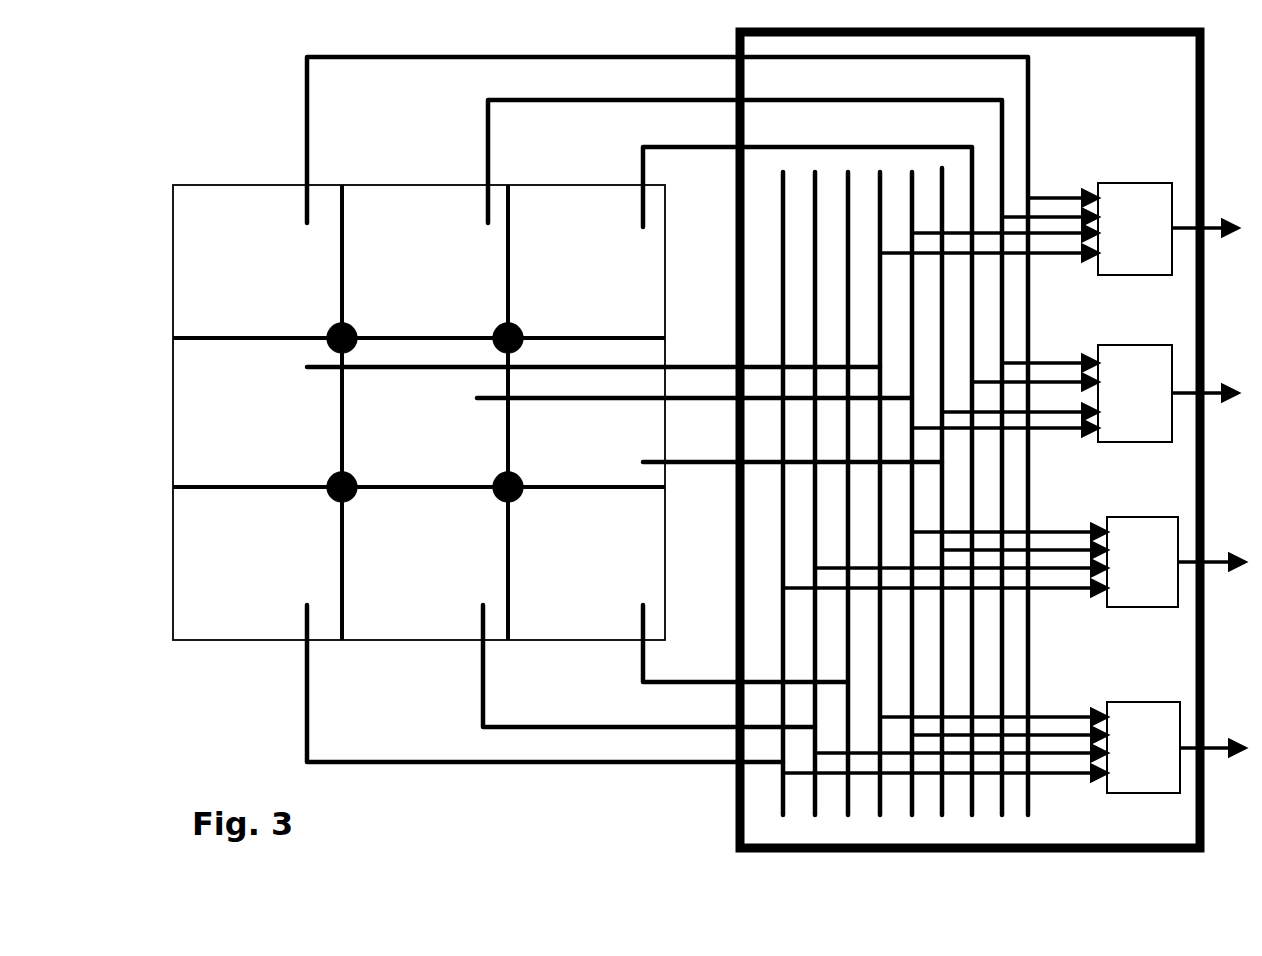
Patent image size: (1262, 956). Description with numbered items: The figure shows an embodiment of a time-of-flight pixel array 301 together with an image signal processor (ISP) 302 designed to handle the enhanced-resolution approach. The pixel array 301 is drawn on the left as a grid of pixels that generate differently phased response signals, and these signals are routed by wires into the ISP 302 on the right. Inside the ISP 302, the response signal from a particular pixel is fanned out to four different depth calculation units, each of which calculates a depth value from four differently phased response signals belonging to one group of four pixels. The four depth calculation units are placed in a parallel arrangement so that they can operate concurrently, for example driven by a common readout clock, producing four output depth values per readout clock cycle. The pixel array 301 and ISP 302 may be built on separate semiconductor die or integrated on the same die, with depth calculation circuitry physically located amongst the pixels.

The pixel array 301 is at (372, 472).
The image signal processor 302 is at (1148, 145).